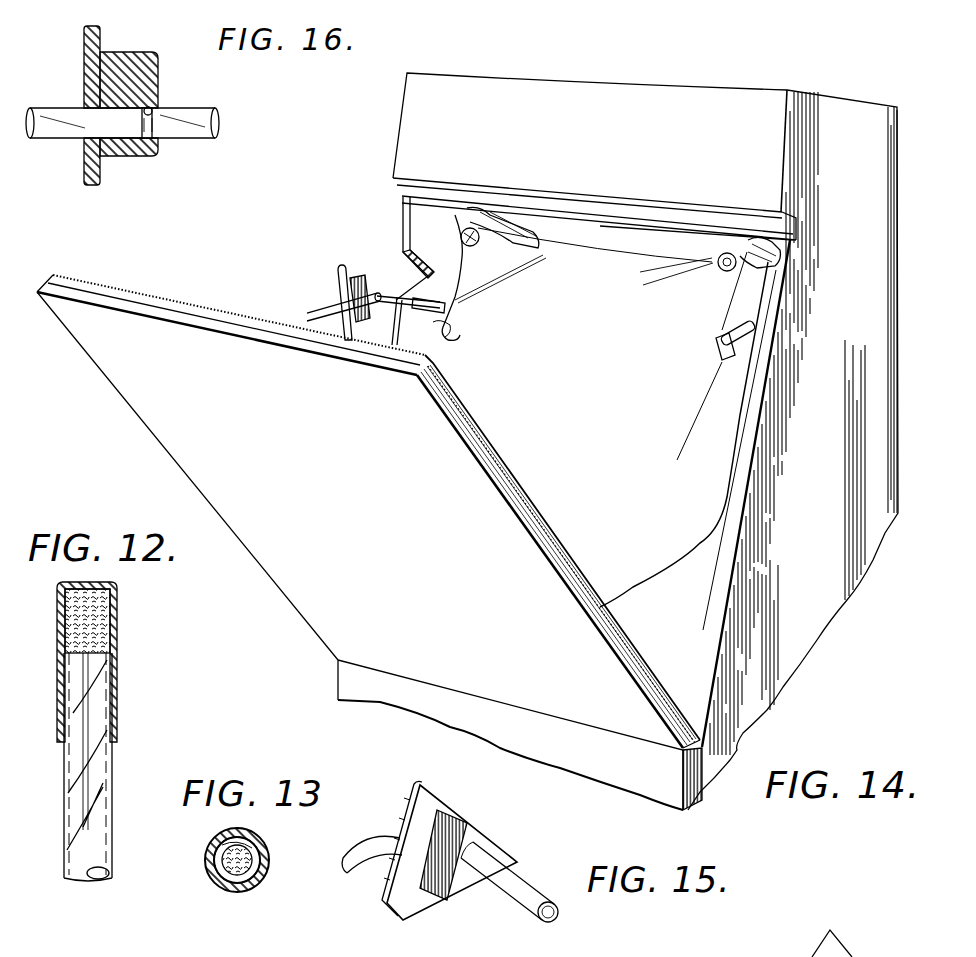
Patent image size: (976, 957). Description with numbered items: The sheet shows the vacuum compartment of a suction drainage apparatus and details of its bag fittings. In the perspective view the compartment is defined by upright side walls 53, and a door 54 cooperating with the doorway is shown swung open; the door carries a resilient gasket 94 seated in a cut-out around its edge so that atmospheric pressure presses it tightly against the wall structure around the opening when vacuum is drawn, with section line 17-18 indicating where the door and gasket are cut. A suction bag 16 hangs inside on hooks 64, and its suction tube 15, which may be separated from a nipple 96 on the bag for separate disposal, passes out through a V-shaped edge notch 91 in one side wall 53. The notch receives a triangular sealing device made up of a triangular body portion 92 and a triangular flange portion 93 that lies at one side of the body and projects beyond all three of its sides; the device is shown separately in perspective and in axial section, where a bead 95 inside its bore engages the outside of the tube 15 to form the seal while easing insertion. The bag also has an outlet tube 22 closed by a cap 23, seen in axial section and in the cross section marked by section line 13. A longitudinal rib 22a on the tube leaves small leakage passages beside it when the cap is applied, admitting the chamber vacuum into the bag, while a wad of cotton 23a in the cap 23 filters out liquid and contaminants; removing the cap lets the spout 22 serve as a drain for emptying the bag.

In FIG. 12, the section line 13 is at (30, 652).
In FIG. 16, the suction tube 15 is at (55, 130).
In FIG. 14, the suction tube 15 is at (312, 313).
In FIG. 15, the suction tube 15 is at (520, 877).
In FIG. 14, the suction bag 16 is at (680, 533).
In FIG. 14, the section line 17-18 is at (28, 254).
In FIG. 14, the outlet tube 22 is at (735, 352).
In FIG. 12, the outlet tube 22 is at (64, 785).
In FIG. 13, the outlet tube 22 is at (218, 878).
In FIG. 12, the longitudinal rib 22a is at (85, 802).
In FIG. 13, the longitudinal rib 22a is at (232, 838).
In FIG. 14, the cap 23 is at (753, 325).
In FIG. 12, the cap 23 is at (113, 635).
In FIG. 13, the cap 23 is at (207, 862).
In FIG. 12, the wad of cotton 23a is at (97, 617).
In FIG. 13, the wad of cotton 23a is at (250, 850).
In FIG. 14, the side walls 53 is at (433, 250).
In FIG. 14, the door 54 is at (150, 403).
In FIG. 14, the hooks 64 is at (462, 233).
In FIG. 14, the edge notch 91 is at (405, 258).
In FIG. 16, the body portion 92 is at (145, 144).
In FIG. 14, the body portion 92 is at (373, 290).
In FIG. 15, the body portion 92 is at (463, 887).
In FIG. 16, the flange portion 93 is at (86, 37).
In FIG. 14, the flange portion 93 is at (348, 277).
In FIG. 15, the flange portion 93 is at (408, 908).
In FIG. 14, the resilient gasket 94 is at (635, 643).
In FIG. 16, the bead 95 is at (152, 110).
In FIG. 14, the nipple 96 is at (447, 322).